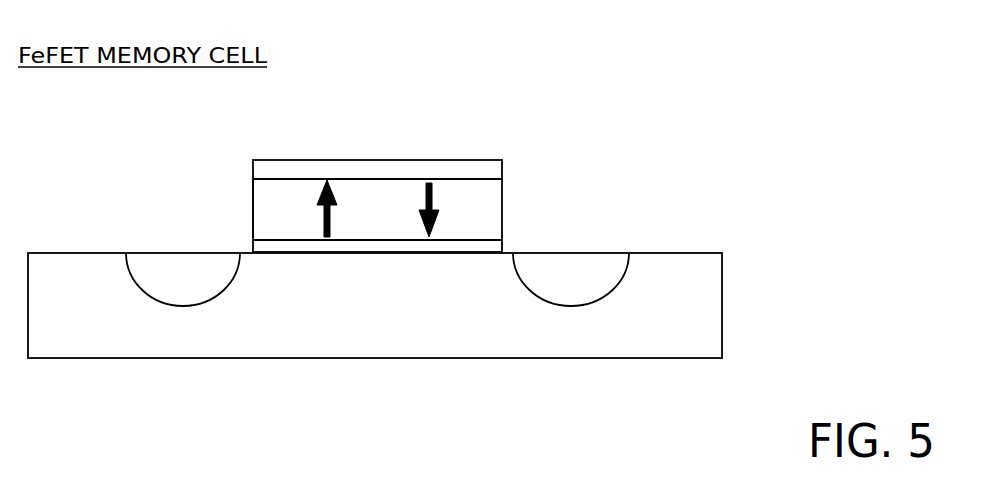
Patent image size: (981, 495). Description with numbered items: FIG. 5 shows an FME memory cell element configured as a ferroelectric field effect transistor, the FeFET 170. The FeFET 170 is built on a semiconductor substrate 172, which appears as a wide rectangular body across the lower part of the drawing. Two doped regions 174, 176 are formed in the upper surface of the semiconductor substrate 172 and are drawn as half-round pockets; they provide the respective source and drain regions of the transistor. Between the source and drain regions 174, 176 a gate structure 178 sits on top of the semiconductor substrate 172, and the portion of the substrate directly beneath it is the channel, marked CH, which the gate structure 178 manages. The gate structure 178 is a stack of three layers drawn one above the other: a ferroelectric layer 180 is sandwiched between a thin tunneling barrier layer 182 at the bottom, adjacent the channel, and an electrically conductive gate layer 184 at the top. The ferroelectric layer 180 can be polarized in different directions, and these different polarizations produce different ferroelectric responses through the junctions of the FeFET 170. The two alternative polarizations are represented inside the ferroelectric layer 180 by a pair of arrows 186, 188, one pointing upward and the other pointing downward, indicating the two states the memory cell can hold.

The FeFET 170 is at (432, 248).
The semiconductor substrate 172 is at (356, 335).
The doped region 174 is at (172, 265).
The doped region 176 is at (608, 265).
The gate structure 178 is at (408, 170).
The ferroelectric layer 180 is at (262, 203).
The tunneling barrier layer 182 is at (492, 248).
The electrically conductive gate layer 184 is at (382, 166).
The arrow 186 is at (323, 227).
The arrow 188 is at (435, 193).